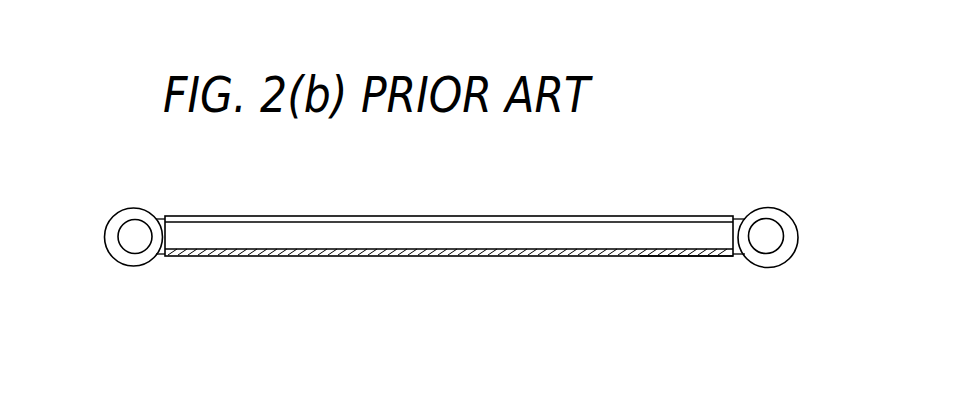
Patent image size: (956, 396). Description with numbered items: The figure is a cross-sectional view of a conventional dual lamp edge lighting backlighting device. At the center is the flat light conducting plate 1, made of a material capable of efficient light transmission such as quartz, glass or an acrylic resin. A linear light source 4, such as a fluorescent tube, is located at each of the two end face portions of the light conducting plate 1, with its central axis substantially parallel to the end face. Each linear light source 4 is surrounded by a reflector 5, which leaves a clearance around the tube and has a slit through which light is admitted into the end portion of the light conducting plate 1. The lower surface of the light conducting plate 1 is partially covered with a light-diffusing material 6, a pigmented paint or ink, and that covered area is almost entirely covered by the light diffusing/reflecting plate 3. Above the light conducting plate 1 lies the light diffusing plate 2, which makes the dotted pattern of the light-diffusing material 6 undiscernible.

The light conducting plate 1 is at (578, 232).
The light diffusing plate 2 is at (453, 216).
The light diffusing/reflecting plate 3 is at (457, 256).
The linear light source 4 is at (131, 233).
The reflector 5 is at (133, 266).
The light-diffusing material 6 is at (674, 256).